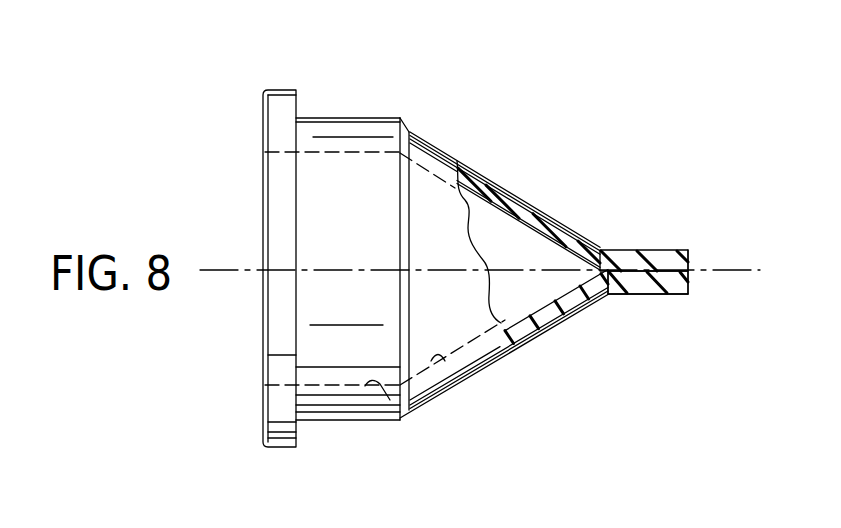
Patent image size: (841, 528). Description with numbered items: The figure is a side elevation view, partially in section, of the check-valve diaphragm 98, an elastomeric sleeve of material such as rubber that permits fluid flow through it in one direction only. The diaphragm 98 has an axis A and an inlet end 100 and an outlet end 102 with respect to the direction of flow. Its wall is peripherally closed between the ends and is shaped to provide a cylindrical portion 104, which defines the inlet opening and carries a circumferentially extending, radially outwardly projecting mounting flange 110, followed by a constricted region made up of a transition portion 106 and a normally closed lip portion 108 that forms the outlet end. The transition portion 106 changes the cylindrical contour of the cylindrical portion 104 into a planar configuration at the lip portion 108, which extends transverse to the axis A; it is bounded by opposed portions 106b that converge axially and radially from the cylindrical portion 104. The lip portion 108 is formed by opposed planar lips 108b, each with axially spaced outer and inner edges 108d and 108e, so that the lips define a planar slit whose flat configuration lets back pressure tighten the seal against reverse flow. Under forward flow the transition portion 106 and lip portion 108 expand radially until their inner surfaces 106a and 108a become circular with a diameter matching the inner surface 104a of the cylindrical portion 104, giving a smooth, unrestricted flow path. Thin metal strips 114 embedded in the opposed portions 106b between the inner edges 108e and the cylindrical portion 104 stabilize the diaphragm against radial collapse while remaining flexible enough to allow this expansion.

The diaphragm 98 is at (487, 88).
The inlet end 100 is at (256, 192).
The outlet end 102 is at (729, 249).
The cylindrical portion 104 is at (324, 430).
The inner surface of cylindrical portion 104a is at (391, 403).
The transition portion 106 is at (460, 153).
The inner surface of transition portion 106a is at (433, 364).
The opposed converging portions 106b is at (497, 181).
The lip portion 108 is at (668, 238).
The inner surface of lip portion 108a is at (633, 270).
The planar lips 108b is at (678, 256).
The outer edges of lips 108d is at (688, 292).
The inner edges of lips 108e is at (608, 297).
The mounting flange 110 is at (291, 113).
The thin metal strips 114 is at (541, 207).
The diaphragm axis A is at (333, 268).